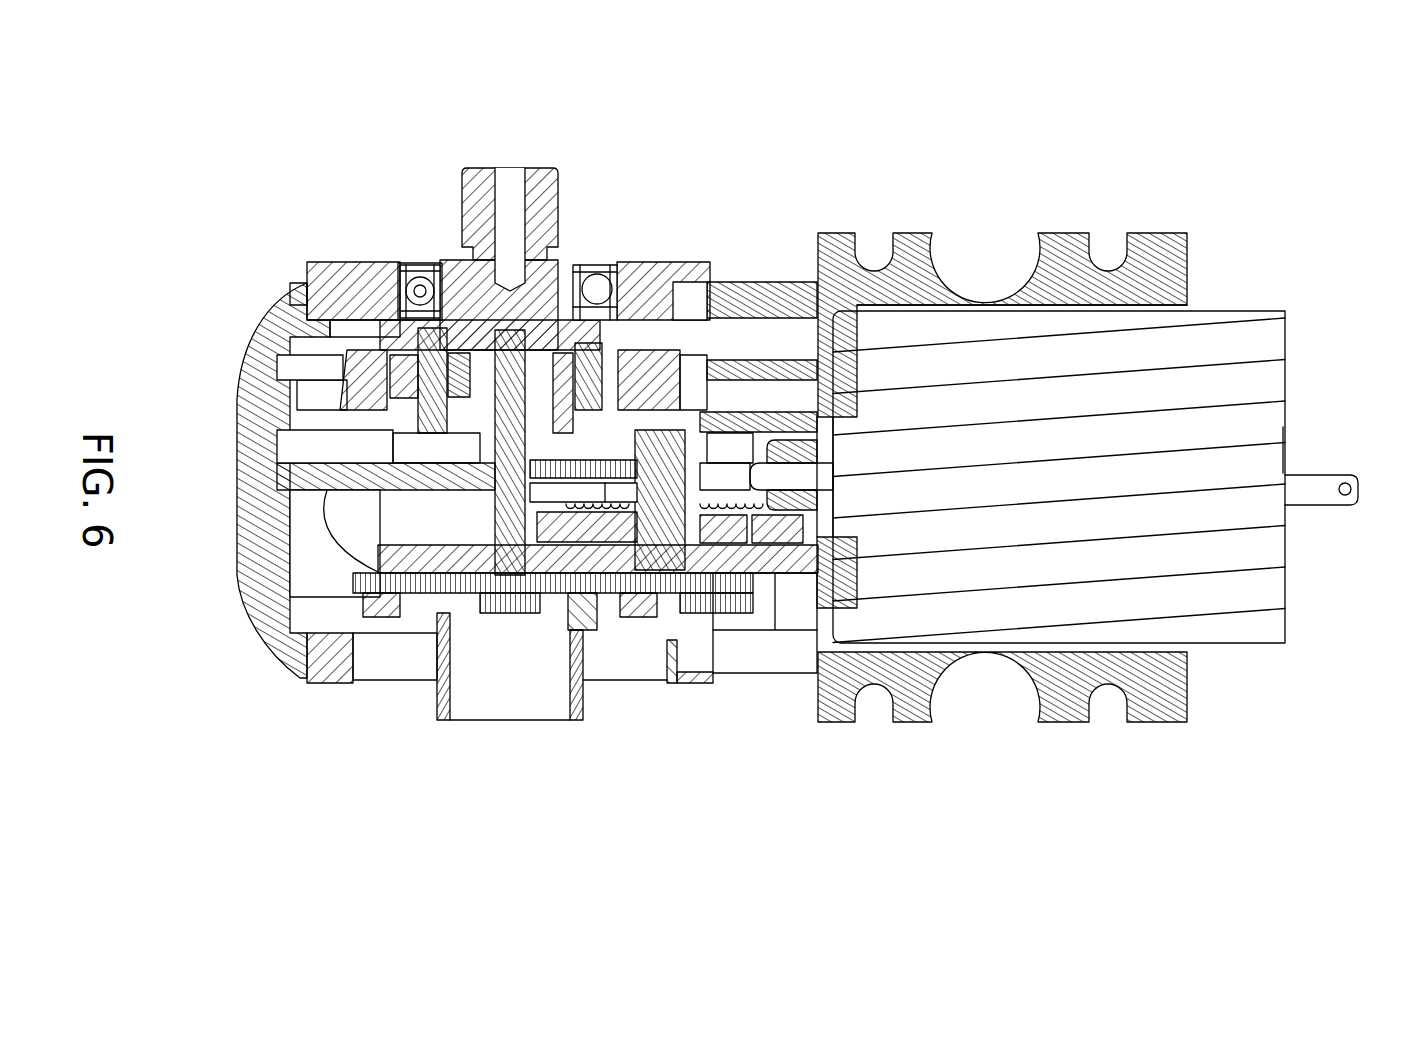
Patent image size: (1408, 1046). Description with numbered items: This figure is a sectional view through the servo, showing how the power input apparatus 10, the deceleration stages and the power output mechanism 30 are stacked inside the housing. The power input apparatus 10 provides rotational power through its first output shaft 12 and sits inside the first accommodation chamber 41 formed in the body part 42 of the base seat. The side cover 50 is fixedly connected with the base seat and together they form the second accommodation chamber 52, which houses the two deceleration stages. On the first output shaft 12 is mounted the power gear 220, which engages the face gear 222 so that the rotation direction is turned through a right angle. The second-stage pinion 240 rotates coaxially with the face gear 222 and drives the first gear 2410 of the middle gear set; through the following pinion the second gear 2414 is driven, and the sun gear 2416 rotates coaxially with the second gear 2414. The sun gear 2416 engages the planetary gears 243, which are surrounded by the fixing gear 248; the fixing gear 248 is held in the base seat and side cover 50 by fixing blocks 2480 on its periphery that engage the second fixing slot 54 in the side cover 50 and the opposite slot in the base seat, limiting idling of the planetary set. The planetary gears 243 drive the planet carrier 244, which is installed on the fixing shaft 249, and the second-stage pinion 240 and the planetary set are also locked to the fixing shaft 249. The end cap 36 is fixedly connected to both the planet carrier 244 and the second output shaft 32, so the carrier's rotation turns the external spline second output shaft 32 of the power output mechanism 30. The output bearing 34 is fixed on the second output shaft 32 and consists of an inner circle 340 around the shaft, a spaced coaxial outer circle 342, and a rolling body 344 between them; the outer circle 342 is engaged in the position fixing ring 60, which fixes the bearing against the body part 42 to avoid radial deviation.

The power input apparatus 10 is at (1210, 367).
The first output shaft 12 is at (795, 473).
The power output mechanism 30 is at (516, 280).
The second output shaft 32 is at (558, 210).
The output bearing 34 is at (410, 166).
The end cap 36 is at (628, 372).
The first accommodation chamber 41 is at (1057, 305).
The body part 42 is at (913, 272).
The side cover 50 is at (235, 490).
The second accommodation chamber 52 is at (337, 538).
The second fixing slot 54 is at (290, 378).
The position fixing ring 60 is at (317, 263).
The power gear 220 is at (778, 448).
The face gear 222 is at (750, 512).
The second-stage pinion 240 is at (643, 480).
The planetary gears 243 is at (362, 337).
The planet carrier 244 is at (453, 600).
The fixing gear 248 is at (353, 360).
The fixing shaft 249 is at (512, 548).
The inner circle 340 is at (438, 263).
The outer circle 342 is at (410, 370).
The rolling body 344 is at (422, 282).
The first gear 2410 is at (597, 483).
The second gear 2414 is at (420, 440).
The sun gear 2416 is at (495, 420).
The fixing blocks 2480 is at (313, 392).